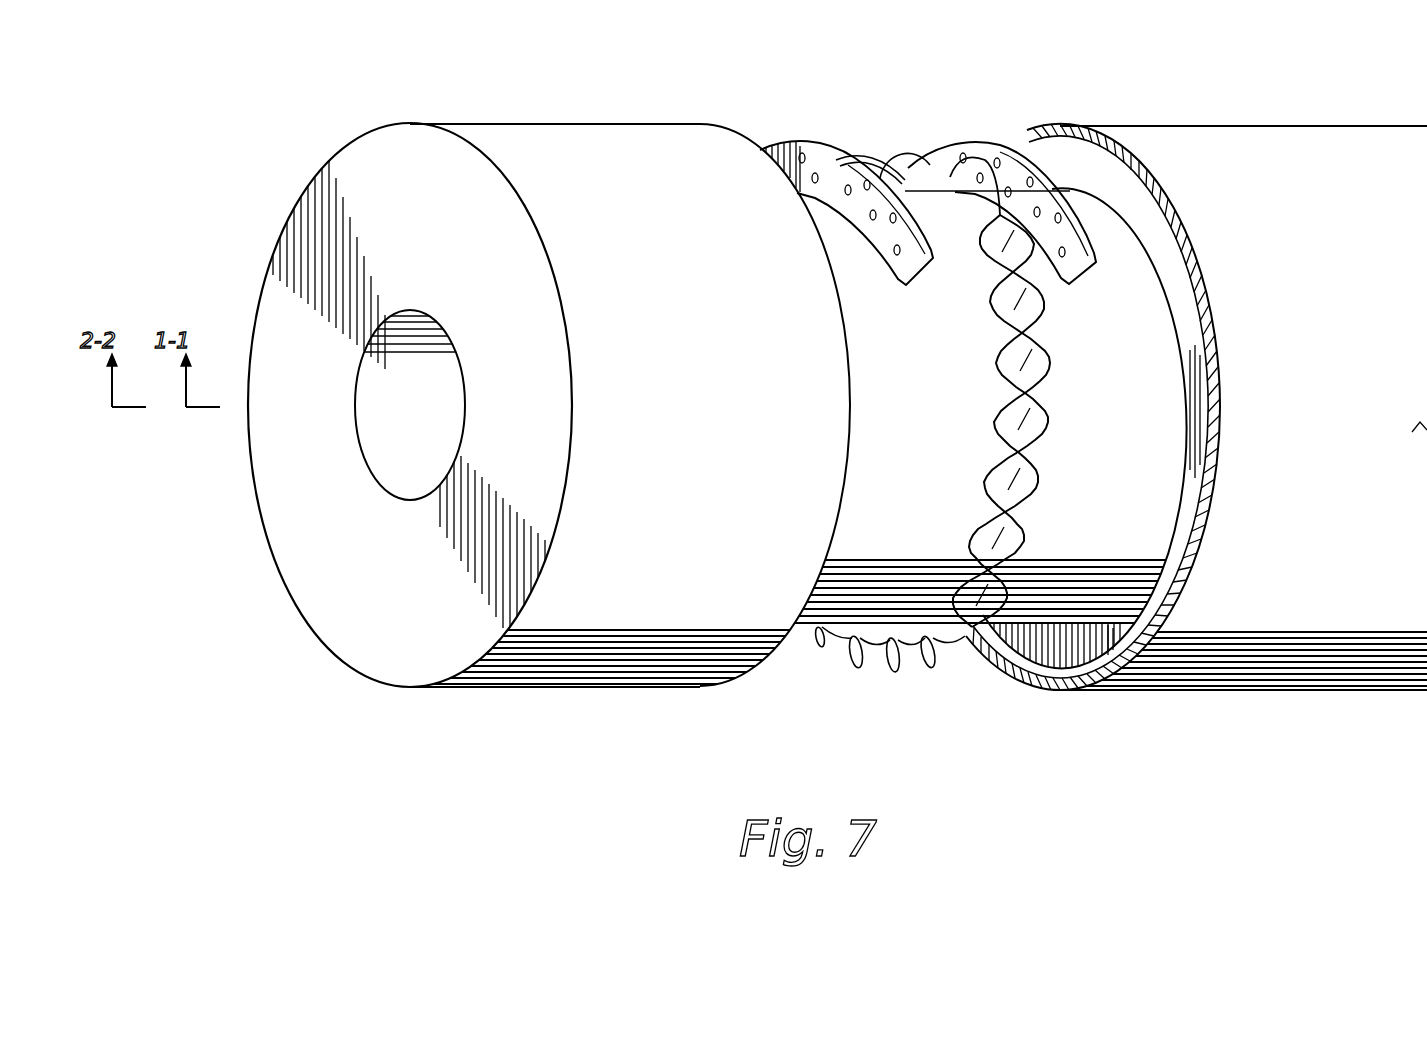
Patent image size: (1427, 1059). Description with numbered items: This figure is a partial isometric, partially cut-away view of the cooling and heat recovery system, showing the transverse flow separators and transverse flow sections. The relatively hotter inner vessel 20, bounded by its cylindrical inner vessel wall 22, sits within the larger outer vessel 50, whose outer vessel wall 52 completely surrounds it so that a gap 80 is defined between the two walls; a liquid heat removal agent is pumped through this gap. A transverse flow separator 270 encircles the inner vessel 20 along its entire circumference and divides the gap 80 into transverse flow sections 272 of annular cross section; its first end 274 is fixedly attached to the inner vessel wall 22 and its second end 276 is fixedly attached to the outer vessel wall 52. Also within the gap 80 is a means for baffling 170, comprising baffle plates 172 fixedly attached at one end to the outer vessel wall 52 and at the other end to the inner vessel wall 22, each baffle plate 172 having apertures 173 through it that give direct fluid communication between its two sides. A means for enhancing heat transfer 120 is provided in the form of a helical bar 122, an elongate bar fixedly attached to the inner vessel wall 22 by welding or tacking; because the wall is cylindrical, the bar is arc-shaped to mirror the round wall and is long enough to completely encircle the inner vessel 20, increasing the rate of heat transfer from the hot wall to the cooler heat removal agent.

The inner vessel 20 is at (824, 633).
The inner vessel wall 22 is at (1141, 416).
The outer vessel 50 is at (574, 123).
The outer vessel wall 52 is at (1178, 610).
The gap 80 is at (866, 364).
The means for enhancing heat transfer 120 is at (900, 690).
The helical bar 122 is at (1005, 425).
The means for baffling 170 is at (923, 169).
The baffle plate 172 is at (786, 140).
The apertures 173 is at (836, 158).
The transverse flow separator 270 is at (1178, 534).
The transverse flow section 272 is at (866, 434).
The first end 274 is at (1182, 474).
The second end 276 is at (1000, 658).